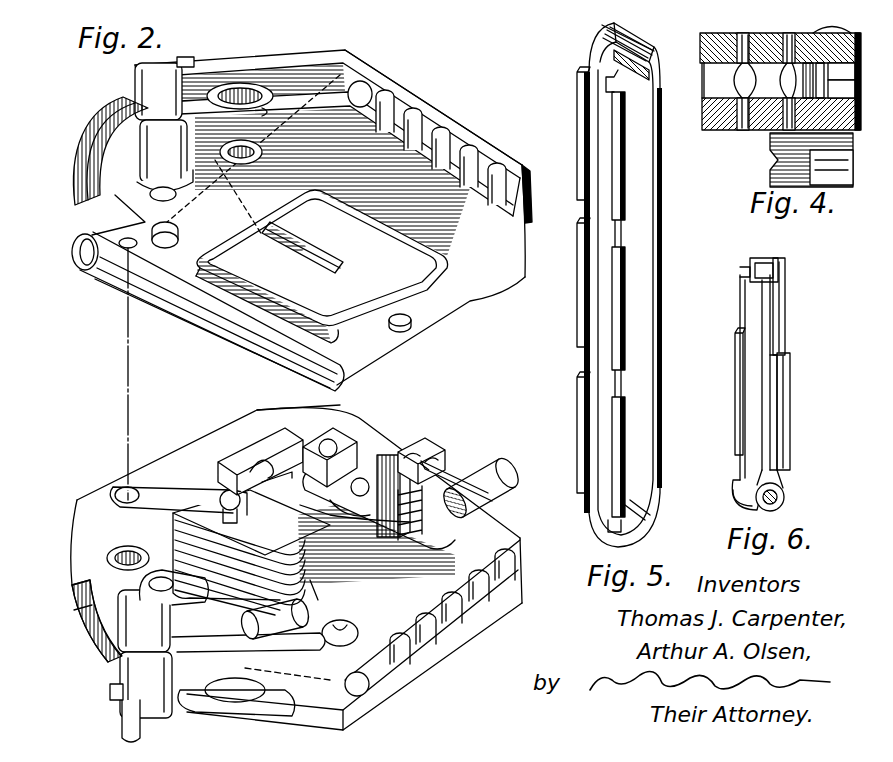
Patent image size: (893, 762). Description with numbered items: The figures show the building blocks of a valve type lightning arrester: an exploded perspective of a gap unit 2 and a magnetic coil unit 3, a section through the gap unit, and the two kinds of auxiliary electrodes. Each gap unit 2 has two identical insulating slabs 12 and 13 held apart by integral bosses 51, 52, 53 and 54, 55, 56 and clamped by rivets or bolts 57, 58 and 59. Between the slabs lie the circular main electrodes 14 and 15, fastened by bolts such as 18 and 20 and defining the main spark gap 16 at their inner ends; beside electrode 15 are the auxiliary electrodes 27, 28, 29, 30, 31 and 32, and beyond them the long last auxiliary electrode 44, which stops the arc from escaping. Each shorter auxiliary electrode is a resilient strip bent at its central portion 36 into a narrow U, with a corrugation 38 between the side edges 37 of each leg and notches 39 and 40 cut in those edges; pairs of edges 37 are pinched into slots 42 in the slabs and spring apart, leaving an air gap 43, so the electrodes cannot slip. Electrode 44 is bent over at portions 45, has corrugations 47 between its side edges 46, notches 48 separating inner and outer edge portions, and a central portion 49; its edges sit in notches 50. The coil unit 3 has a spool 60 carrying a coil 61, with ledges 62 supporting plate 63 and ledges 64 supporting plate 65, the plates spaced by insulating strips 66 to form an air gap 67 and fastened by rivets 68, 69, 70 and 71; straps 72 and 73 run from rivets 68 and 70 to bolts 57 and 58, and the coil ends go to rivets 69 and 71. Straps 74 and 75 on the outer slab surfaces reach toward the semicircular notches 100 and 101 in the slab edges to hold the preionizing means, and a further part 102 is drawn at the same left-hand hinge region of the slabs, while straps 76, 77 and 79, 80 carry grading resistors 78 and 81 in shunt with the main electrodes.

In FIG. 2, the gap unit 2 is at (340, 53).
In FIG. 2, the magnetic coil unit 3 is at (358, 416).
In FIG. 2, the electrical insulating material plate or slab 12 is at (478, 136).
In FIG. 2, the electrical insulating material plate or slab 13 is at (505, 289).
In FIG. 2, the main electrode 14 is at (213, 208).
In FIG. 2, the main electrode 15 is at (366, 84).
In FIG. 2, the main spark gap 16 is at (243, 210).
In FIG. 2, the bolt 18 is at (181, 243).
In FIG. 2, the bolt 20 is at (356, 630).
In FIG. 2, the auxiliary electrode 27 is at (410, 706).
In FIG. 2, the auxiliary electrode 28 is at (420, 118).
In FIG. 2, the auxiliary electrode 29 is at (438, 136).
In FIG. 2, the auxiliary electrode 30 is at (474, 154).
In FIG. 2, the auxiliary electrode 31 is at (498, 167).
In FIG. 2, the auxiliary electrode 32 is at (524, 168).
In FIG. 4, the auxiliary electrode 32 is at (722, 88).
In FIG. 6, the central portion 36 is at (740, 503).
In FIG. 4, the lengthwise extending side edge or flange 37 is at (733, 133).
In FIG. 6, the lengthwise extending side edge or flange 37 is at (736, 370).
In FIG. 2, the lengthwise extending corrugation or depression 38 is at (233, 140).
In FIG. 4, the lengthwise extending corrugation or depression 38 is at (722, 75).
In FIG. 6, the lengthwise extending corrugation or depression 38 is at (755, 420).
In FIG. 6, the notch 39 is at (785, 497).
In FIG. 6, the notch 40 is at (788, 302).
In FIG. 4, the slot 42 is at (745, 55).
In FIG. 6, the air gap 43 is at (784, 407).
In FIG. 5, the last auxiliary electrode 44 is at (697, 233).
In FIG. 4, the last auxiliary electrode 44 is at (802, 80).
In FIG. 5, the bent portion 45 is at (625, 46).
In FIG. 5, the lengthwise extending side edge or flange 46 is at (577, 118).
In FIG. 4, the lengthwise extending side edge or flange 46 is at (805, 140).
In FIG. 5, the lengthwise extending corrugation or furrow 47 is at (585, 362).
In FIG. 5, the notch 48 is at (577, 205).
In FIG. 5, the central portion 49 is at (662, 293).
In FIG. 4, the notch 50 is at (792, 60).
In FIG. 2, the integral boss 51 is at (109, 142).
In FIG. 2, the integral boss 52 is at (237, 86).
In FIG. 4, the integral boss 53 is at (841, 72).
In FIG. 2, the integral boss 54 is at (90, 646).
In FIG. 2, the integral boss 55 is at (228, 106).
In FIG. 4, the integral boss 56 is at (841, 89).
In FIG. 2, the rivet or bolt 57 is at (124, 247).
In FIG. 2, the rivet or bolt 58 is at (250, 668).
In FIG. 2, the rivet or bolt 59 is at (412, 328).
In FIG. 4, the rivet or bolt 59 is at (826, 28).
In FIG. 2, the electrical insulating material spool 60 is at (367, 421).
In FIG. 2, the electrical coil 61 is at (171, 537).
In FIG. 2, the integral ledge 62 is at (315, 451).
In FIG. 2, the metallic plate 63 is at (273, 487).
In FIG. 2, the integral ledge 64 is at (362, 522).
In FIG. 2, the metallic plate 65 is at (338, 525).
In FIG. 2, the electrical insulating material strip 66 is at (384, 452).
In FIG. 2, the air gap 67 is at (276, 452).
In FIG. 2, the bolt or rivet 68 is at (219, 500).
In FIG. 2, the bolt or rivet 69 is at (333, 441).
In FIG. 2, the bolt or rivet 70 is at (313, 586).
In FIG. 2, the bolt or rivet 71 is at (414, 452).
In FIG. 2, the metallic strap 72 is at (178, 501).
In FIG. 2, the metallic strap 73 is at (226, 625).
In FIG. 2, the metallic strap 74 is at (248, 649).
In FIG. 2, the metallic strap 75 is at (113, 206).
In FIG. 2, the metallic strap 76 is at (456, 481).
In FIG. 2, the metallic strap 77 is at (275, 618).
In FIG. 2, the grading resistor 78 is at (480, 522).
In FIG. 2, the metallic strap 79 is at (386, 334).
In FIG. 2, the metallic strap 80 is at (97, 288).
In FIG. 2, the grading resistor 81 is at (212, 311).
In FIG. 2, the semicircular notch 100 is at (134, 103).
In FIG. 2, the semicircular notch 101 is at (118, 698).
In FIG. 2, the hinge 102 is at (162, 62).